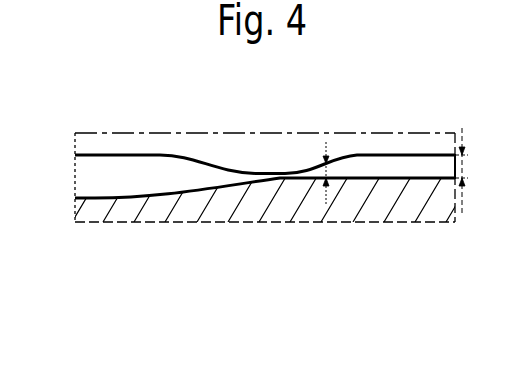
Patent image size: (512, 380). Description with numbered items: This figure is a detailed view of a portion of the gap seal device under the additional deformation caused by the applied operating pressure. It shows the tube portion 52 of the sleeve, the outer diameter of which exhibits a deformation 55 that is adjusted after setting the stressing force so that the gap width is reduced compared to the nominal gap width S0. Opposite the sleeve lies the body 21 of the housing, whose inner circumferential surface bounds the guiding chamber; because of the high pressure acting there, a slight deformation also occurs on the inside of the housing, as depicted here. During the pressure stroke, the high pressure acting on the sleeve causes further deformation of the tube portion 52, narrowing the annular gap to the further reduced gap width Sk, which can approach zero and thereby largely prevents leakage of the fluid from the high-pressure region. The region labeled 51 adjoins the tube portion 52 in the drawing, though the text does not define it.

The body 21 is at (432, 213).
The first layer portion with nominal thickness 51 is at (109, 144).
The tube portion 52 is at (238, 143).
The deformation 55 is at (282, 172).
The further reduced gap width Sk is at (343, 172).
The nominal gap width S0 is at (474, 171).